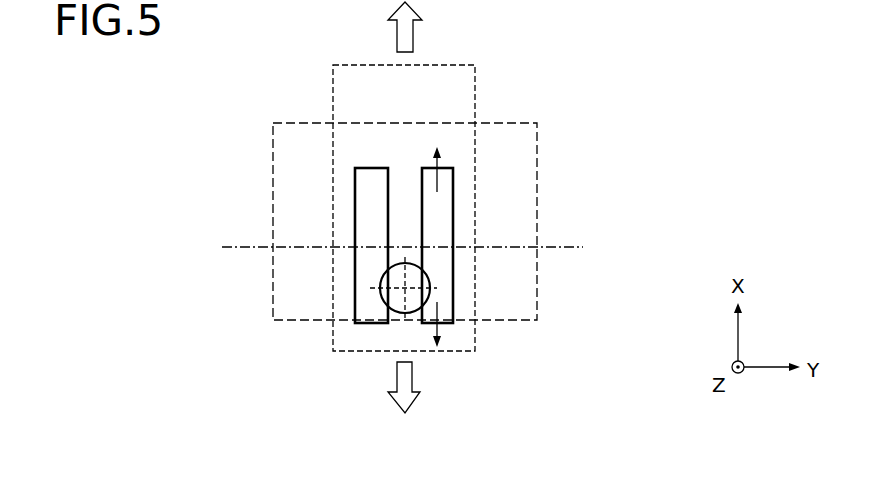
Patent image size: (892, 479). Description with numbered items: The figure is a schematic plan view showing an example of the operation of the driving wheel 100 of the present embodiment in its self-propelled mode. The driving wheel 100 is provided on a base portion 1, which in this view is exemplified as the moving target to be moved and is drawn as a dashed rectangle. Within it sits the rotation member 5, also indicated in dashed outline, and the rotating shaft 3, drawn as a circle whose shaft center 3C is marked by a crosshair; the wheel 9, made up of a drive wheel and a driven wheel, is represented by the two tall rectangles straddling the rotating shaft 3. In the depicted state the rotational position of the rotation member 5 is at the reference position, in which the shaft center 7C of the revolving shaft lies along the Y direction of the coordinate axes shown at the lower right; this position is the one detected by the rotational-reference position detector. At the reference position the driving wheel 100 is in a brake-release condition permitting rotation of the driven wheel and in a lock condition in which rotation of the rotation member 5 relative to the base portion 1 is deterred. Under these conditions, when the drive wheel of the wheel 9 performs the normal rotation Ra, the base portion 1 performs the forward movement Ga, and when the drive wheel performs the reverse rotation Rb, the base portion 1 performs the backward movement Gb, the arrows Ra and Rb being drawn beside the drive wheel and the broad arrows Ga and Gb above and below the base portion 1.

The driving wheel 100 is at (661, 30).
The base portion 1 is at (476, 78).
The rotation member 5 is at (537, 133).
The shaft center 7C is at (581, 246).
The wheel 9 is at (354, 198).
The rotating shaft 3 is at (398, 312).
The shaft center 3C is at (405, 290).
The normal rotation Ra is at (441, 162).
The reverse rotation Rb is at (440, 306).
The forward movement Ga is at (413, 32).
The backward movement Gb is at (416, 397).